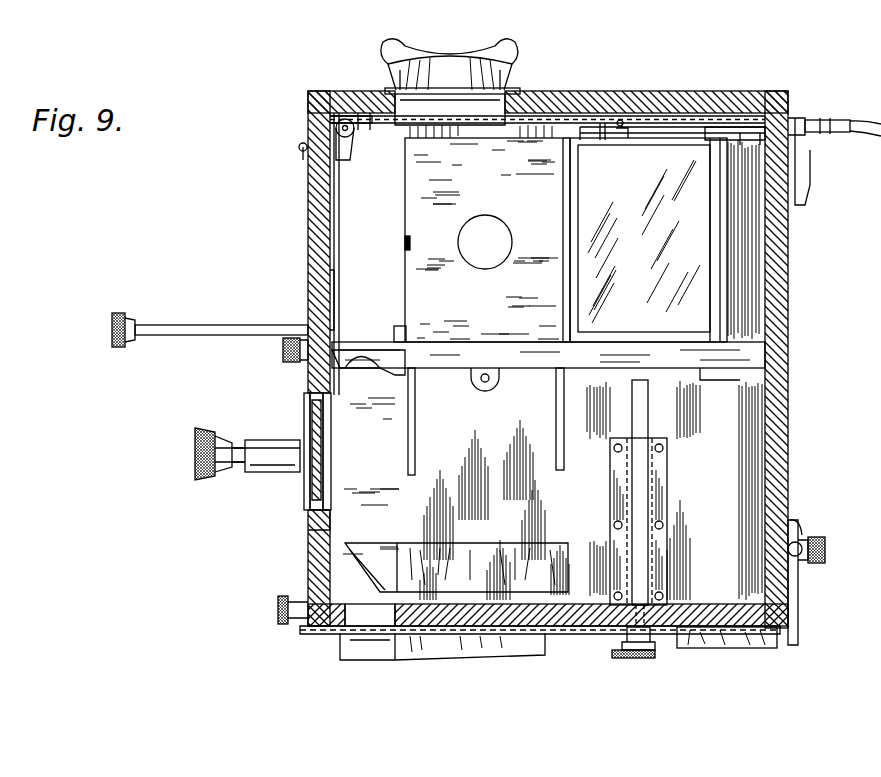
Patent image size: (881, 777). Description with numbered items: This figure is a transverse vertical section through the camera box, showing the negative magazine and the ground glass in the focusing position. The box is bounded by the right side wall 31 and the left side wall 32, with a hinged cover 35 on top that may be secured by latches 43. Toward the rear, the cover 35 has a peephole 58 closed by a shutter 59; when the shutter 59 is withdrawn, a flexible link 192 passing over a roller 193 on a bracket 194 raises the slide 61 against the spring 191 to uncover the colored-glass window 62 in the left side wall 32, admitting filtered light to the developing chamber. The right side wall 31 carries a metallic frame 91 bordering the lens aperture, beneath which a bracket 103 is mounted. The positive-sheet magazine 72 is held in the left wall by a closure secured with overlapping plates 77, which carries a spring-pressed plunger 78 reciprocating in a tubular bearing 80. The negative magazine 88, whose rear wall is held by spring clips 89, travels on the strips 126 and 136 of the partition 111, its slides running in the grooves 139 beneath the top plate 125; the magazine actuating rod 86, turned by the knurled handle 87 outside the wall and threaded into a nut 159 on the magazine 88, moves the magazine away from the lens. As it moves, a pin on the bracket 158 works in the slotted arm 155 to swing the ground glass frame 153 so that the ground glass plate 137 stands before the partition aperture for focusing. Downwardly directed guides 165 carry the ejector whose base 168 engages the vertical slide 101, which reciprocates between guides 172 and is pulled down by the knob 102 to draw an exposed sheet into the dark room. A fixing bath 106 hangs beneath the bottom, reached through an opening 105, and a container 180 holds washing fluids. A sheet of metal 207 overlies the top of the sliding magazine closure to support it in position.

The right side wall 31 is at (777, 273).
The left side wall 32 is at (318, 226).
The hinged cover 35 is at (586, 112).
The latches 43 is at (800, 138).
The peephole 58 is at (396, 96).
The shutter 59 is at (482, 108).
The slide 61 is at (320, 480).
The window 62 is at (312, 490).
The magazine 72 is at (325, 540).
The overlapping plates 77 is at (306, 572).
The plunger 78 is at (232, 444).
The tubular bearing 80 is at (270, 452).
The magazine actuating rod 86 is at (184, 326).
The knurled handle 87 is at (122, 312).
The magazine 88 is at (412, 292).
The spring clips 89 is at (404, 243).
The metallic frame 91 is at (782, 445).
The slide 101 is at (632, 535).
The knob 102 is at (612, 654).
The bracket 103 is at (702, 640).
The opening 105 is at (358, 606).
The fixing bath 106 is at (350, 648).
The partition 111 is at (412, 470).
The top plate 125 is at (678, 118).
The strip 126 is at (716, 126).
The strip or track 136 is at (701, 372).
The ground glass plate 137 is at (680, 258).
The grooves 139 is at (740, 140).
The ground glass frame 153 is at (710, 232).
The arm 155 is at (610, 135).
The bracket 158 is at (625, 128).
The nut 159 is at (400, 330).
The guides or tracks 165 is at (555, 398).
The ejector base 168 is at (470, 358).
The guides 172 is at (654, 472).
The container 180 is at (486, 555).
The spring 191 is at (334, 294).
The flexible link 192 is at (337, 258).
The roller 193 is at (340, 128).
The bracket 194 is at (348, 142).
The sheet of metal 207 is at (370, 368).